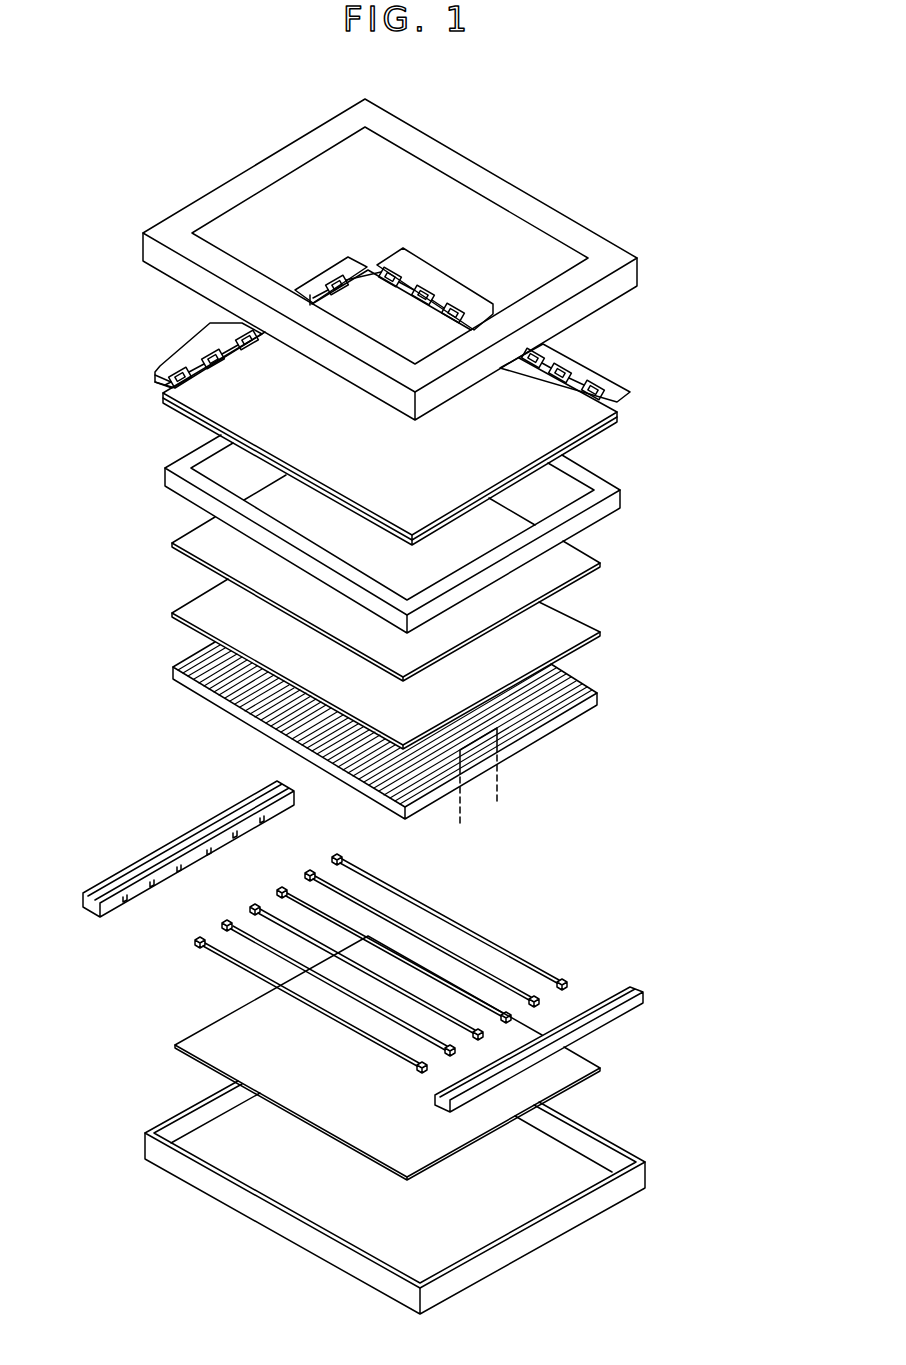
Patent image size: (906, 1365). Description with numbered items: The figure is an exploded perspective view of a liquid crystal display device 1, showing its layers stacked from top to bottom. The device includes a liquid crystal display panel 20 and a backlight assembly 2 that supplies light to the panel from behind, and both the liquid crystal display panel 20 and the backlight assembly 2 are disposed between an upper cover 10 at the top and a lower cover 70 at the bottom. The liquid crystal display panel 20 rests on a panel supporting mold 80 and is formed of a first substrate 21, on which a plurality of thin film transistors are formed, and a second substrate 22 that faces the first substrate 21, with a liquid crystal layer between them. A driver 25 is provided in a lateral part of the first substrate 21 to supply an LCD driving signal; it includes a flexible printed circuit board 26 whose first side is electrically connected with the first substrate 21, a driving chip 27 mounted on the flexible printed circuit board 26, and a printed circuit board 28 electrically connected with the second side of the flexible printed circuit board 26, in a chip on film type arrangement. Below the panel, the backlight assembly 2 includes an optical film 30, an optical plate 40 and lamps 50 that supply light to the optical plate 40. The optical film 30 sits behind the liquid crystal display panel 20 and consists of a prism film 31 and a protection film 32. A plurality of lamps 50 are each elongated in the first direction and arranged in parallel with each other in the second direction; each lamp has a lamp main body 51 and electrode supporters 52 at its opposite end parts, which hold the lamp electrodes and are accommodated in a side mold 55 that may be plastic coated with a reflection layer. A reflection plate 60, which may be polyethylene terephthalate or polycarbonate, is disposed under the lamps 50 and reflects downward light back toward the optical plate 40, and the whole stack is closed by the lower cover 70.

The liquid crystal display device 1 is at (237, 162).
The backlight assembly 2 is at (757, 592).
The upper cover 10 is at (640, 272).
The liquid crystal display panel 20 is at (716, 417).
The first substrate 21 is at (612, 410).
The second substrate 22 is at (622, 430).
The driver 25 is at (72, 330).
The flexible printed circuit board 26 is at (168, 380).
The driving chip 27 is at (165, 383).
The printed circuit board 28 is at (168, 352).
The optical film 30 is at (716, 556).
The prism film 31 is at (603, 630).
The protection film 32 is at (603, 560).
The optical plate 40 is at (150, 690).
The lamp 50 is at (612, 932).
The lamp main body 51 is at (478, 936).
The electrode supporter 52 is at (566, 987).
The side mold 55 is at (120, 868).
The reflection plate 60 is at (612, 1062).
The lower cover 70 is at (648, 1170).
The panel supporting mold 80 is at (167, 478).